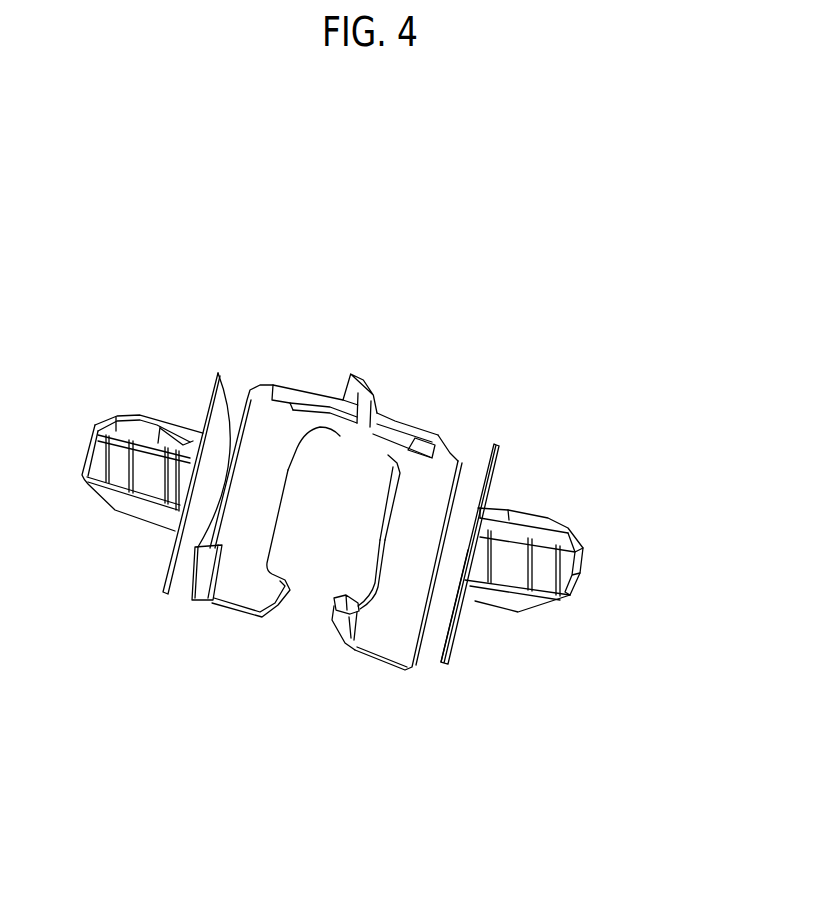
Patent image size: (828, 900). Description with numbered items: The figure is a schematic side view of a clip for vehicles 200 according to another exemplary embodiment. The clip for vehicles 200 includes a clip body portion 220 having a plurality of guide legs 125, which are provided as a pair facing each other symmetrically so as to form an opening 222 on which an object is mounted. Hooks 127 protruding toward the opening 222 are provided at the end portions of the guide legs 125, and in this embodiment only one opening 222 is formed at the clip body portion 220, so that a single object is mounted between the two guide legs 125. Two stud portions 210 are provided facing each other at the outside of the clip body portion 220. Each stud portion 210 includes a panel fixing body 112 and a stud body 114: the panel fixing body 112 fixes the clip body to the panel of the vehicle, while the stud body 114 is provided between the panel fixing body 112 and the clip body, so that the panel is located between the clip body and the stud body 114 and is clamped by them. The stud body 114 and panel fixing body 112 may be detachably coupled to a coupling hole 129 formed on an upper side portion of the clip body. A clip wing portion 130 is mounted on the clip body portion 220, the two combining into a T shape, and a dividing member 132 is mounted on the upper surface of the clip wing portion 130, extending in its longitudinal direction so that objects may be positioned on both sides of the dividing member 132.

The clip for vehicles 200 is at (334, 229).
The stud portions 210 is at (563, 528).
The clip body portion 220 is at (432, 498).
The opening 222 is at (383, 542).
The panel fixing body 112 is at (585, 565).
The stud body 114 is at (457, 630).
The guide legs 125 is at (250, 598).
The hooks 127 is at (346, 644).
The coupling hole 129 is at (205, 608).
The clip wing portion 130 is at (393, 430).
The dividing member 132 is at (368, 398).